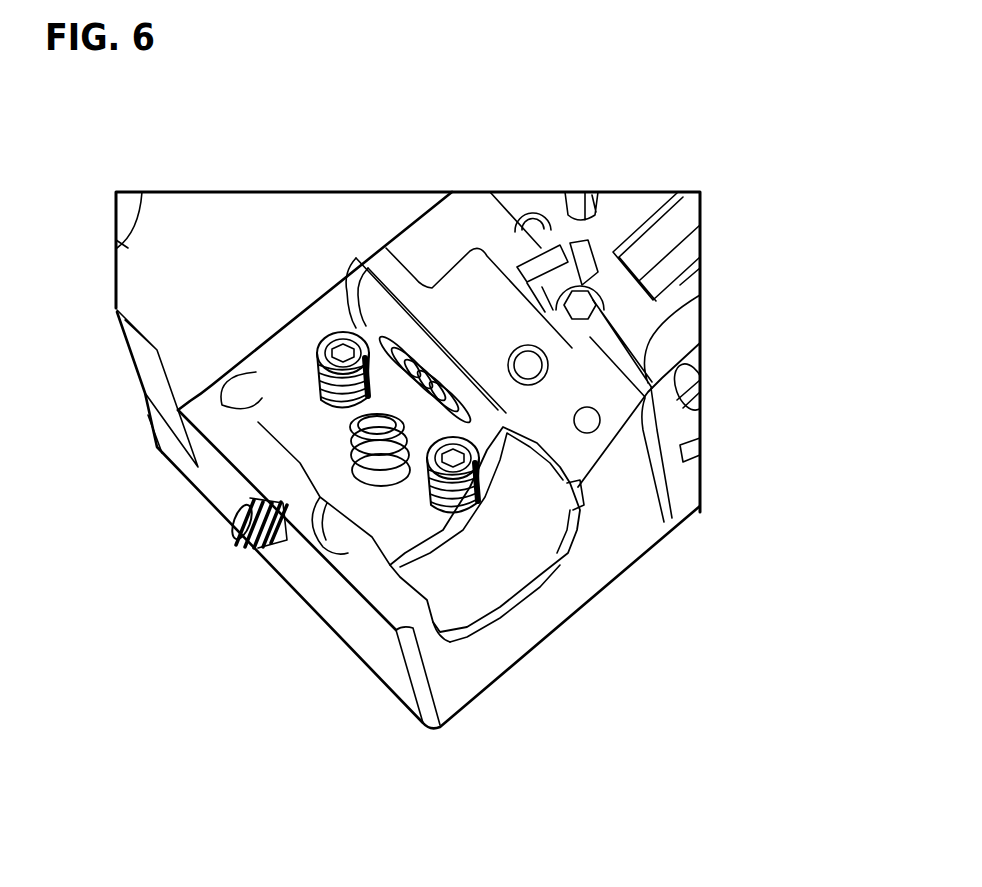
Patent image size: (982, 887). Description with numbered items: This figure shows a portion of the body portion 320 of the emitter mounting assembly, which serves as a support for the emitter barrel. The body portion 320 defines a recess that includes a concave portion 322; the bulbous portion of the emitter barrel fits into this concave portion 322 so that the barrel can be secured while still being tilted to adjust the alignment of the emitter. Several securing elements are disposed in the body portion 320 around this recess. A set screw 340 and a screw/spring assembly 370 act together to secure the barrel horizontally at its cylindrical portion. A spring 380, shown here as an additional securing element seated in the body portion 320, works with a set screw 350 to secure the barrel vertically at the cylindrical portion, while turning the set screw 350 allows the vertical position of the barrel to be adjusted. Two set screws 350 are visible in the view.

The body portion 320 is at (458, 683).
The concave portion 322 is at (480, 577).
The set screw 340 is at (247, 537).
The set screw 350 is at (330, 347).
The screw/spring assembly 370 is at (428, 343).
The spring 380 is at (352, 440).